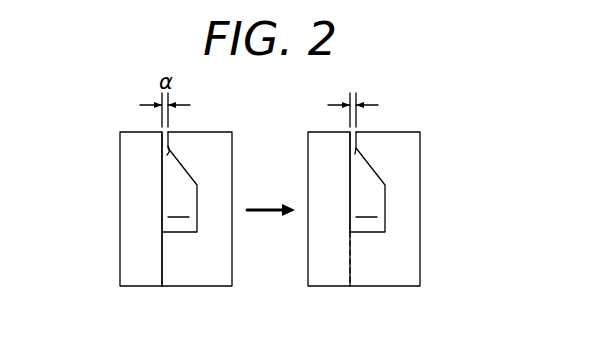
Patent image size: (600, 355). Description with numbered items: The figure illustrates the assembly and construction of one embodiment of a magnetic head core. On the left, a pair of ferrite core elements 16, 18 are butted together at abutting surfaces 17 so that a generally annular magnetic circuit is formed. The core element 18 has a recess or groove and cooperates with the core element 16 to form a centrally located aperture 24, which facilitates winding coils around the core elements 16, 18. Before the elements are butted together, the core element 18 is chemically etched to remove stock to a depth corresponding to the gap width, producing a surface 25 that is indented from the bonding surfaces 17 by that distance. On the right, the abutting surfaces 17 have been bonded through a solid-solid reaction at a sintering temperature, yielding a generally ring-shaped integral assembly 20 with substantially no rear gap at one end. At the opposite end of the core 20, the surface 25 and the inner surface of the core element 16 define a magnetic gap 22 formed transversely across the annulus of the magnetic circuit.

The core element 16 is at (133, 272).
The abutting surfaces 17 is at (160, 265).
The core element 18 is at (207, 270).
The integral assembly 20 is at (320, 272).
The magnetic gap 22 is at (353, 157).
The aperture 24 is at (179, 182).
The surface 25 is at (166, 156).